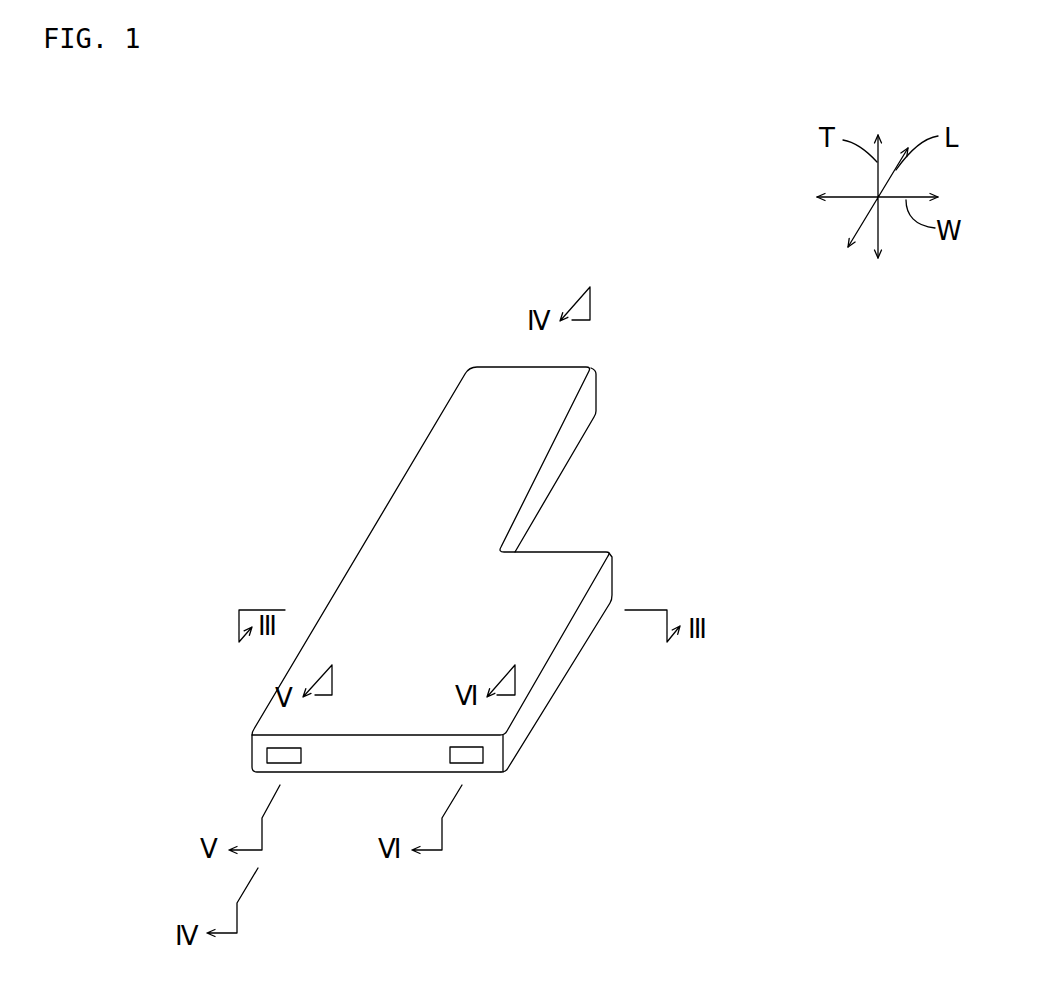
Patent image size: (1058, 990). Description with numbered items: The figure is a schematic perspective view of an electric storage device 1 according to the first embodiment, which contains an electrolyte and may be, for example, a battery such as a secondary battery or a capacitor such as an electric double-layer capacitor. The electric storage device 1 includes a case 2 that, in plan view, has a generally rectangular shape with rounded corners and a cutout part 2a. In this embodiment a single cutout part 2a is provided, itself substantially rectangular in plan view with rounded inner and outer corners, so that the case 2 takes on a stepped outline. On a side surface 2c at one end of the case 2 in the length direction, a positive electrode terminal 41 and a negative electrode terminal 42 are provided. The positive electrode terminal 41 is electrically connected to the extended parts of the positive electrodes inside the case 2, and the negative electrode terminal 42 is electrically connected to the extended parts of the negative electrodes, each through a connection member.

The electric storage device 1 is at (711, 288).
The case 2 is at (551, 702).
The cutout part 2a is at (527, 508).
The side surface 2c is at (400, 758).
The positive electrode terminal 41 is at (283, 761).
The negative electrode terminal 42 is at (467, 757).